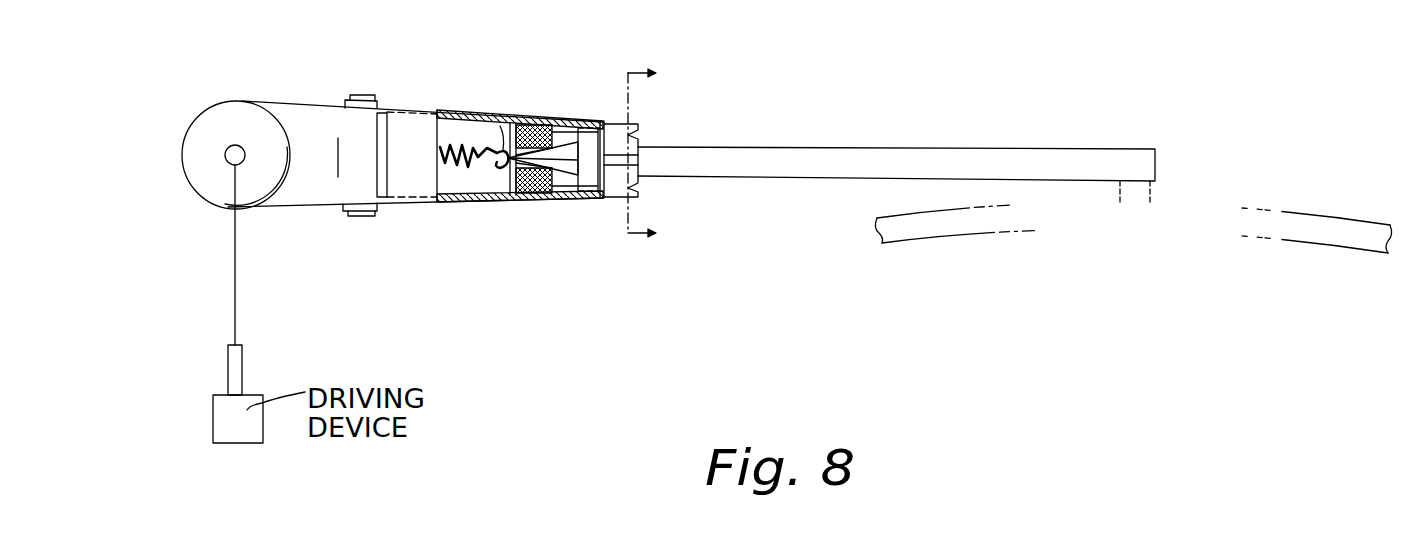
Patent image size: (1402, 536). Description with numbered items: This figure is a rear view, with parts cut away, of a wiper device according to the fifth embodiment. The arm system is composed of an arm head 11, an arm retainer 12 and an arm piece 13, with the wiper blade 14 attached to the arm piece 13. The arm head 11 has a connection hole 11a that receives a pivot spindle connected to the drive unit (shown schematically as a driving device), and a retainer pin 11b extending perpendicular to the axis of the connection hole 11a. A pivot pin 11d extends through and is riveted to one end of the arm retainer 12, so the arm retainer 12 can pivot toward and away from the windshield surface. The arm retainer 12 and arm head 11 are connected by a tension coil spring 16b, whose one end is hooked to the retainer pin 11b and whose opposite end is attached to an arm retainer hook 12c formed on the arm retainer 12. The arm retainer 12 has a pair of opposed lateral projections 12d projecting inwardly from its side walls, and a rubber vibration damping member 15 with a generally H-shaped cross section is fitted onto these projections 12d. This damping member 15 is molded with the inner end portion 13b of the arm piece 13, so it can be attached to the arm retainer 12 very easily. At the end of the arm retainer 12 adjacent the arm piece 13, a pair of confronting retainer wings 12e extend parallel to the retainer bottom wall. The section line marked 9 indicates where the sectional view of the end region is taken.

The arm head 11 is at (213, 106).
The connection hole 11a is at (224, 153).
The retainer pin 11b is at (283, 208).
The pivot pin 11d is at (348, 96).
The arm retainer 12 is at (393, 106).
The arm retainer hook 12c is at (500, 125).
The lateral projections 12d is at (532, 118).
The retainer wings 12e is at (628, 140).
The arm piece 13 is at (770, 163).
The inner end portion 13b is at (538, 118).
The wiper blade 14 is at (1057, 232).
The rubber vibration damping member 15 is at (510, 172).
The tension coil spring 16b is at (458, 173).
The section line 9- 9 is at (653, 154).